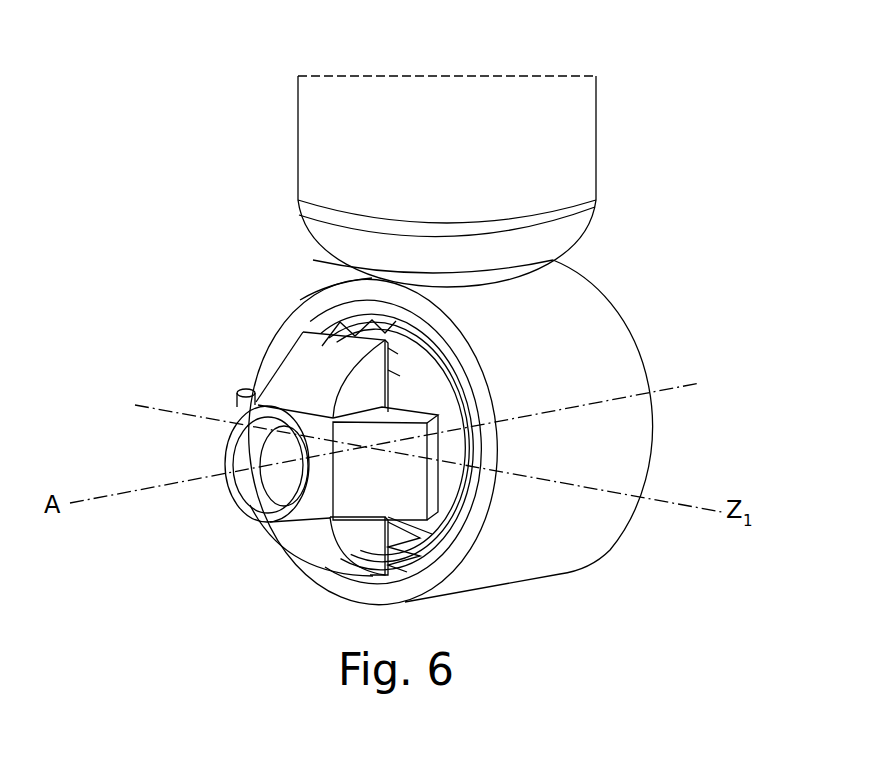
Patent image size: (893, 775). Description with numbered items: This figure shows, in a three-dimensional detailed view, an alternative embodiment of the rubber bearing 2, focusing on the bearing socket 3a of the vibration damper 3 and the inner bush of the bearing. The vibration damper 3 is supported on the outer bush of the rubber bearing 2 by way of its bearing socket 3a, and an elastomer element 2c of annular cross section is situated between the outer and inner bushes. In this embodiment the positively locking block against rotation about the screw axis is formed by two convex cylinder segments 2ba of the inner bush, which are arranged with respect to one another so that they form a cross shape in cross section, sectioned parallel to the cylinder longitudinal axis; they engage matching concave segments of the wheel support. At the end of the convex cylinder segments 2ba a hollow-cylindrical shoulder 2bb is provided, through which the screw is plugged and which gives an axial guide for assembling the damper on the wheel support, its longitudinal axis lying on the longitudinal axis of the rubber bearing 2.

The vibration damper 3 is at (562, 147).
The bearing socket 3a is at (580, 320).
The rubber bearing 2 is at (355, 585).
The convex cylinder segment 2ba is at (298, 363).
The hollow-cylindrical shoulder 2bb is at (257, 495).
The elastomer element 2c is at (432, 393).